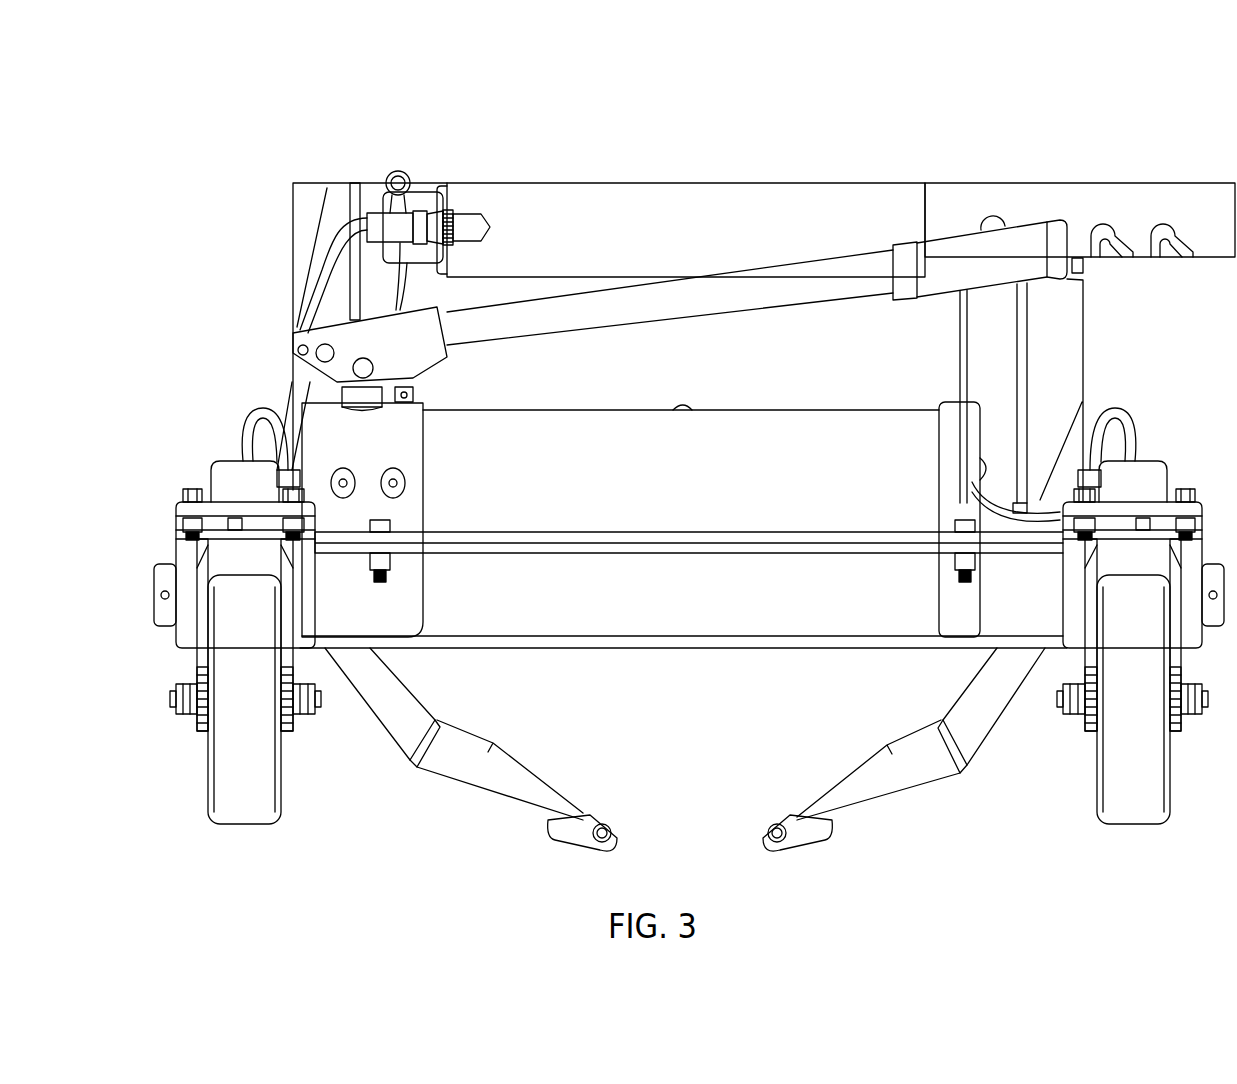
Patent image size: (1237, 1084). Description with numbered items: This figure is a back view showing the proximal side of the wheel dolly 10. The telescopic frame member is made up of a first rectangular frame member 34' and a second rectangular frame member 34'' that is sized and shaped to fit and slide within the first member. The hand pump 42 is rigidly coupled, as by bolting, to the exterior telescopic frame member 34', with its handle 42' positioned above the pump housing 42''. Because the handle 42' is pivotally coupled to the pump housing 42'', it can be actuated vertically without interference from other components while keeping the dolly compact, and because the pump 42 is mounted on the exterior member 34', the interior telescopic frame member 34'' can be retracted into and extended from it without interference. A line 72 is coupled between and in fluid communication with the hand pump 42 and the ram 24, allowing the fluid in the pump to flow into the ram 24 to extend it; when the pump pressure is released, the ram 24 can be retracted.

The wheel dolly 10 is at (1032, 168).
The ram 24 is at (836, 223).
The line 72 is at (322, 288).
The handle 42' is at (765, 309).
The hand pump 42 is at (683, 501).
The pump housing 42'' is at (912, 458).
The first rectangular frame member 34' is at (506, 737).
The second rectangular frame member 34'' is at (913, 736).